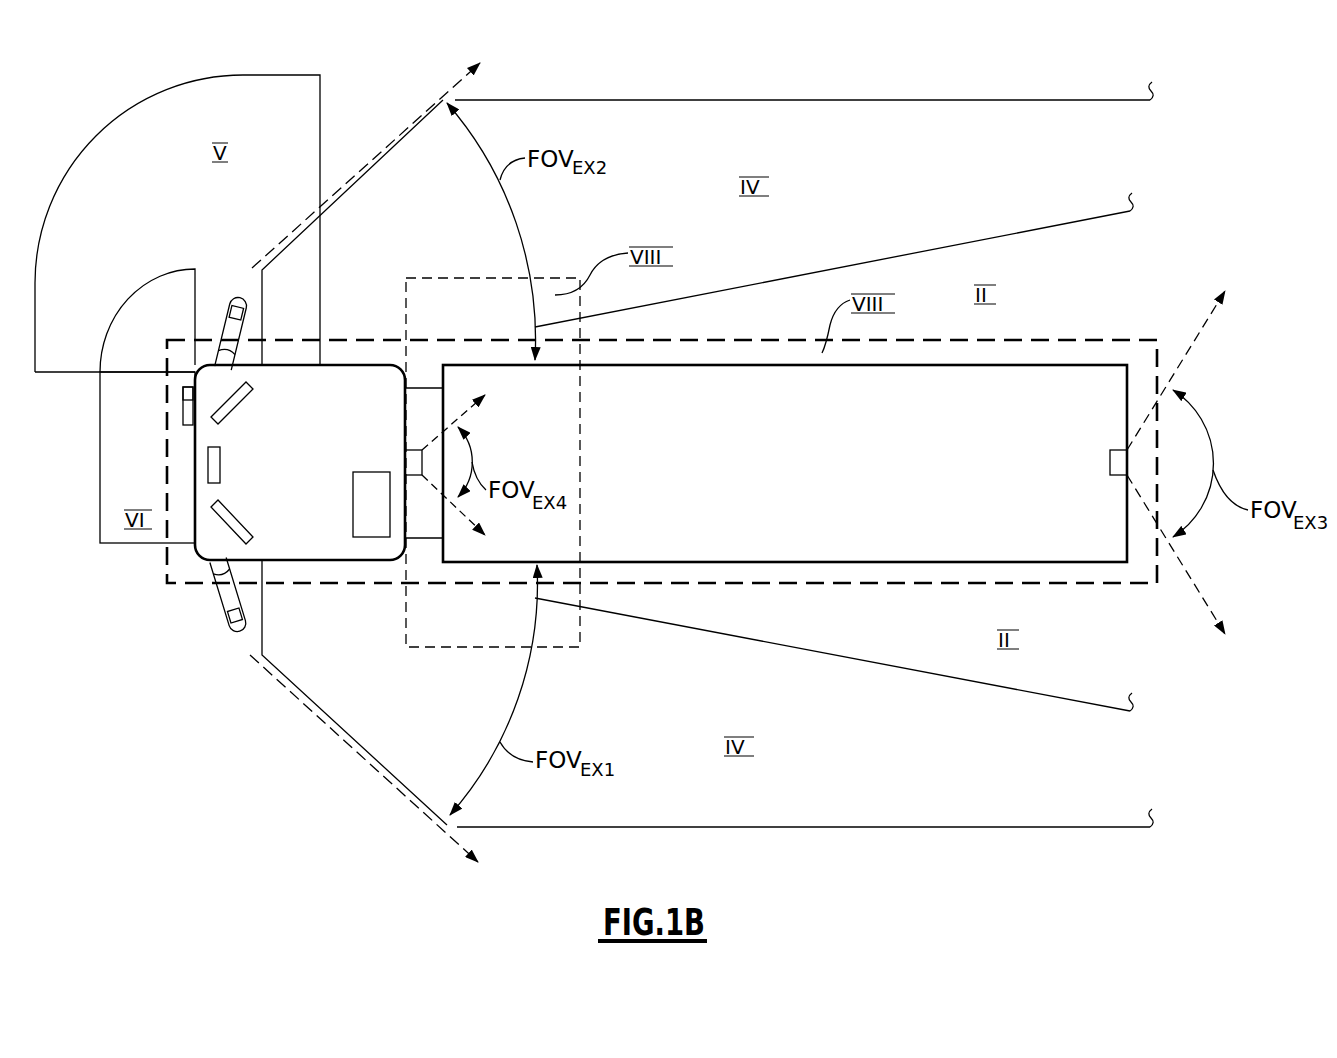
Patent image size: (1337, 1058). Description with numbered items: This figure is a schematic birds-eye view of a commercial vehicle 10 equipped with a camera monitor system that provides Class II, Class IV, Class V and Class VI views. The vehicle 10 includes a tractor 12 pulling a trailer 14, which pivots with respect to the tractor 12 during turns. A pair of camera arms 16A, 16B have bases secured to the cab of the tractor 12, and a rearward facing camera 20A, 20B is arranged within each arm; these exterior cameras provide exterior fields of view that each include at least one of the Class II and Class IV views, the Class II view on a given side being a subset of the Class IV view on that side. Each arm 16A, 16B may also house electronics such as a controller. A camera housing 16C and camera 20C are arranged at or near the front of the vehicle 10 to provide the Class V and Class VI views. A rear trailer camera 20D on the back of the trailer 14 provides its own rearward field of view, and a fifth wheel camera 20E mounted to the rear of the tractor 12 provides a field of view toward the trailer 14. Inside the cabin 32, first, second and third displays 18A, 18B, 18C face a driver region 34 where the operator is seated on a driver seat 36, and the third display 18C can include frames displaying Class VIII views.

The commercial vehicle 10 is at (168, 351).
The tractor 12 is at (192, 555).
The trailer 14 is at (1036, 358).
The camera arm 16A is at (225, 605).
The camera arm 16B is at (230, 313).
The camera housing 16C is at (183, 410).
The first display 18A is at (243, 527).
The second display 18B is at (240, 398).
The third display 18C is at (208, 460).
The rearward facing camera 20A is at (248, 615).
The rearward facing camera 20B is at (245, 310).
The camera 20C is at (183, 393).
The rear trailer camera 20D is at (1110, 462).
The fifth wheel camera 20E is at (415, 452).
The cabin 32 is at (346, 388).
The driver region 34 is at (345, 494).
The driver seat 36 is at (373, 485).